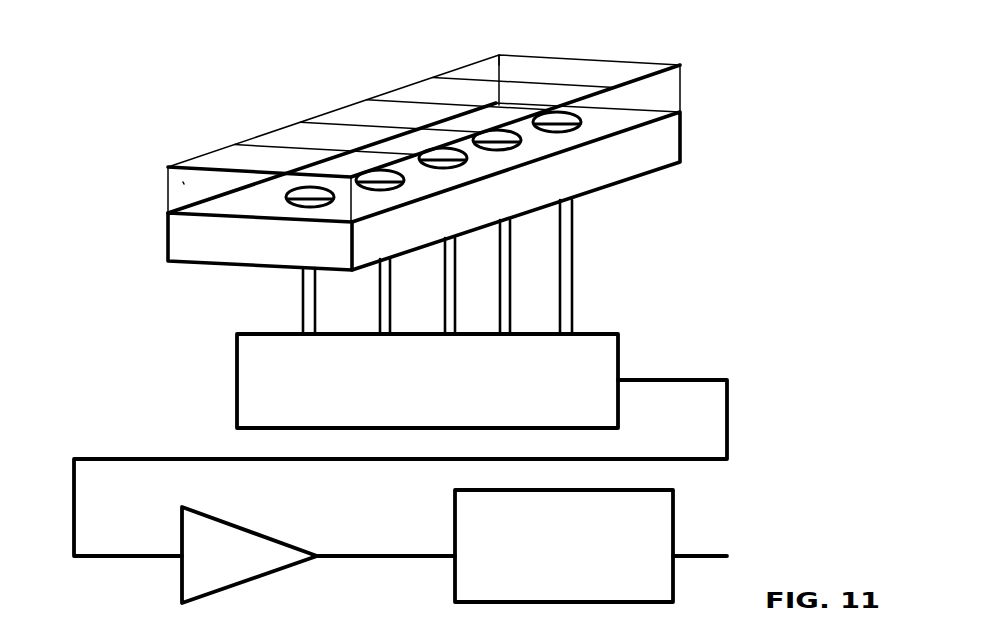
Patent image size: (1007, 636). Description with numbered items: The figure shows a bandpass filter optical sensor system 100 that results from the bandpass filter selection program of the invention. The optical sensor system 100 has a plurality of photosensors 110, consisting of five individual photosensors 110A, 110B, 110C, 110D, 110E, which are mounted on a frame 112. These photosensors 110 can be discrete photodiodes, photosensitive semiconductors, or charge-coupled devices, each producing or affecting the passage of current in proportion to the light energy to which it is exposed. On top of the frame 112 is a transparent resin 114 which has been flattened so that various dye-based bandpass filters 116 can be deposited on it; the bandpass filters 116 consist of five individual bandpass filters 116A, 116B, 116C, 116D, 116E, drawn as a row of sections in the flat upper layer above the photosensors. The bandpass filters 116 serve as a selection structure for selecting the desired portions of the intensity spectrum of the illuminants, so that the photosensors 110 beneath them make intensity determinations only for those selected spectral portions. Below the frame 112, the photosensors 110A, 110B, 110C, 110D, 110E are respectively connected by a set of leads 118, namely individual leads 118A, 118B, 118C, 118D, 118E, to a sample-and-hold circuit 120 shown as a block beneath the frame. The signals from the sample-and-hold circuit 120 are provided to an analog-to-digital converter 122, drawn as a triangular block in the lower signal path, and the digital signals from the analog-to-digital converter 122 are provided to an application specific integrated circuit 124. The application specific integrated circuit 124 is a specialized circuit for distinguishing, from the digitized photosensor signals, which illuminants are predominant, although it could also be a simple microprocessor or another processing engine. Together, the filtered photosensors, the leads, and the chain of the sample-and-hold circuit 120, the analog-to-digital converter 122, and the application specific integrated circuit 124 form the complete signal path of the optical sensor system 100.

The bandpass filter optical sensor system 100 is at (770, 78).
The photosensors 110 is at (816, 234).
The photosensor 110A is at (334, 197).
The photosensor 110B is at (404, 179).
The photosensor 110C is at (467, 157).
The photosensor 110D is at (521, 139).
The photosensor 110E is at (581, 121).
The frame 112 is at (217, 242).
The transparent resin 114 is at (183, 181).
The bandpass filters 116 is at (167, 58).
The bandpass filter 116A is at (235, 157).
The bandpass filter 116B is at (292, 134).
The bandpass filter 116C is at (367, 109).
The bandpass filter 116D is at (436, 85).
The bandpass filter 116E is at (496, 66).
The leads 118 is at (687, 277).
The lead 118A is at (303, 297).
The lead 118B is at (380, 310).
The lead 118C is at (445, 280).
The lead 118D is at (500, 280).
The lead 118E is at (572, 308).
The sample-and-hold circuit 120 is at (400, 445).
The analog-to-digital converter 122 is at (318, 555).
The application specific integrated circuit 124 is at (591, 546).